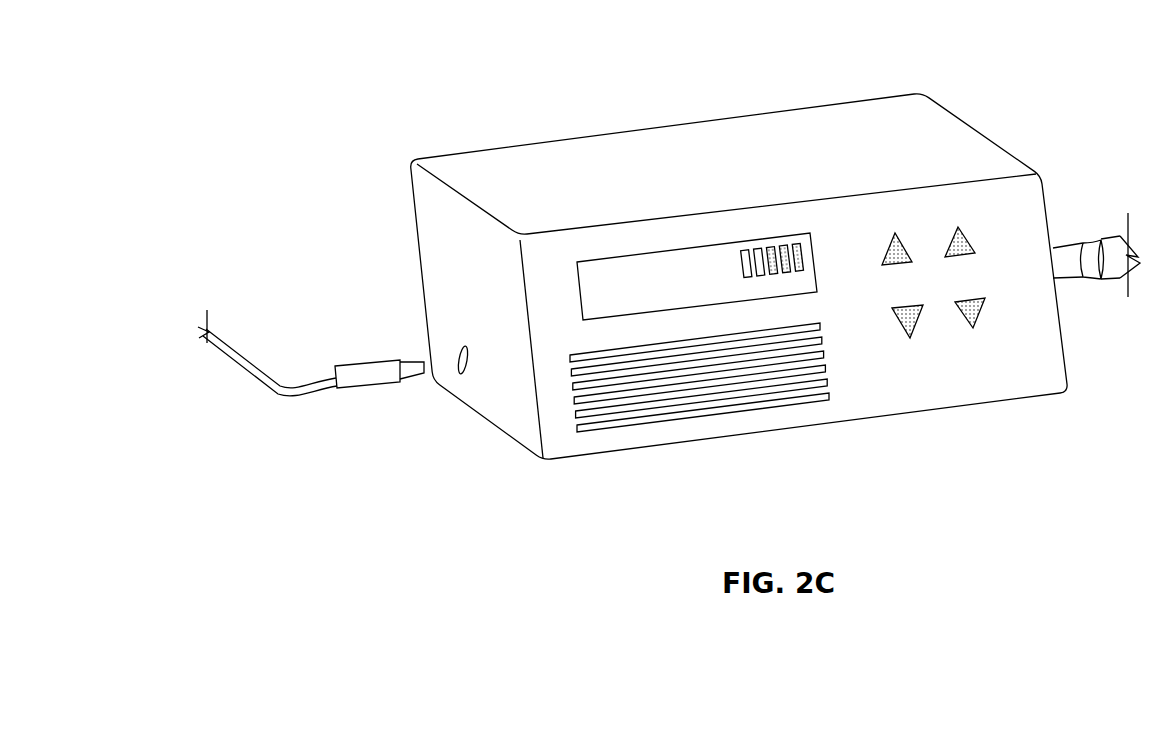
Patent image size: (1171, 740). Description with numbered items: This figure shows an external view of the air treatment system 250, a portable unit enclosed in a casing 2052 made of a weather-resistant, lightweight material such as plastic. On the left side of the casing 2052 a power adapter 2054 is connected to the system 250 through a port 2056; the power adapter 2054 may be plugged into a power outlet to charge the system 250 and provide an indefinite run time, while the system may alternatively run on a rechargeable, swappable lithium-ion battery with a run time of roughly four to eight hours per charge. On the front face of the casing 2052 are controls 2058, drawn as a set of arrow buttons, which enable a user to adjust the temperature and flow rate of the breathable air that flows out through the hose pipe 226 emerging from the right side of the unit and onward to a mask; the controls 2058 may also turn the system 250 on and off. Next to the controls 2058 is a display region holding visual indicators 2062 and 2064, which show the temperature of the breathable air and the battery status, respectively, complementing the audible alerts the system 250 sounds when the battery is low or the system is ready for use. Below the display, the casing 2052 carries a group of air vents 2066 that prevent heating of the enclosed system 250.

The air treatment system 250 is at (481, 137).
The casing 2052 is at (917, 117).
The power adapter 2054 is at (368, 360).
The port 2056 is at (459, 362).
The controls 2058 is at (987, 240).
The visual indicator 2062 is at (618, 263).
The visual indicator 2064 is at (772, 247).
The air vents 2066 is at (727, 387).
The hose pipe 226 is at (1113, 237).